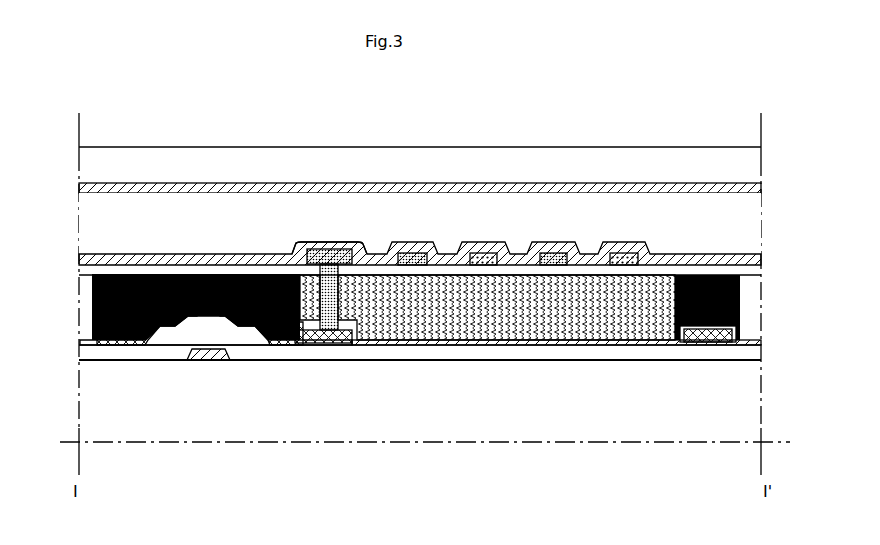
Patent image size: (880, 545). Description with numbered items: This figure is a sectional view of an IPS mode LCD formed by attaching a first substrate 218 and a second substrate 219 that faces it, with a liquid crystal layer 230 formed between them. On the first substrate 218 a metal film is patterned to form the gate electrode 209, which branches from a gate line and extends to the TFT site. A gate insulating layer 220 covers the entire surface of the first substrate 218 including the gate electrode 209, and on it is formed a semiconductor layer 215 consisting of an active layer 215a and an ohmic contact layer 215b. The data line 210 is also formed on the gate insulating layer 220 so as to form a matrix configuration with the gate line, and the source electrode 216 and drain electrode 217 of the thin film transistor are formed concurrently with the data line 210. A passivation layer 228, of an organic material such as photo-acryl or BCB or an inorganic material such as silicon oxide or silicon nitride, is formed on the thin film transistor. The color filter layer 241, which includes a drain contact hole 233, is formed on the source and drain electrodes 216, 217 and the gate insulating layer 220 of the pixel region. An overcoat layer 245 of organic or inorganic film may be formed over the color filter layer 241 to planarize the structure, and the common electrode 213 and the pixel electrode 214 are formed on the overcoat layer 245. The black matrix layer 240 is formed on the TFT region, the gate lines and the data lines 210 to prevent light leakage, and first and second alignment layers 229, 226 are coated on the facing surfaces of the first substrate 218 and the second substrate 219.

The gate electrode 209 is at (214, 362).
The data line 210 is at (713, 330).
The common electrode 213 is at (483, 266).
The pixel electrode 214 is at (345, 248).
The semiconductor layer 215 is at (200, 403).
The active layer 215a is at (167, 340).
The ohmic contact layer 215b is at (143, 343).
The source electrode 216 is at (95, 338).
The drain electrode 217 is at (311, 345).
The first substrate 218 is at (752, 405).
The second substrate 219 is at (755, 155).
The gate insulating layer 220 is at (397, 350).
The second alignment layer 226 is at (750, 188).
The passivation layer 228 is at (755, 345).
The first alignment layer 229 is at (752, 252).
The liquid crystal layer 230 is at (755, 214).
The drain contact hole 233 is at (331, 244).
The black matrix layer 240 is at (92, 288).
The color filter layer 241 is at (648, 330).
The overcoat layer 245 is at (752, 273).